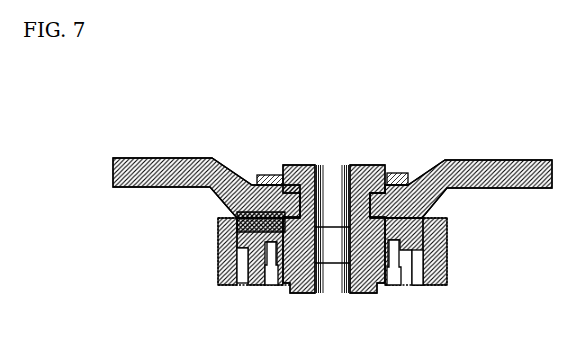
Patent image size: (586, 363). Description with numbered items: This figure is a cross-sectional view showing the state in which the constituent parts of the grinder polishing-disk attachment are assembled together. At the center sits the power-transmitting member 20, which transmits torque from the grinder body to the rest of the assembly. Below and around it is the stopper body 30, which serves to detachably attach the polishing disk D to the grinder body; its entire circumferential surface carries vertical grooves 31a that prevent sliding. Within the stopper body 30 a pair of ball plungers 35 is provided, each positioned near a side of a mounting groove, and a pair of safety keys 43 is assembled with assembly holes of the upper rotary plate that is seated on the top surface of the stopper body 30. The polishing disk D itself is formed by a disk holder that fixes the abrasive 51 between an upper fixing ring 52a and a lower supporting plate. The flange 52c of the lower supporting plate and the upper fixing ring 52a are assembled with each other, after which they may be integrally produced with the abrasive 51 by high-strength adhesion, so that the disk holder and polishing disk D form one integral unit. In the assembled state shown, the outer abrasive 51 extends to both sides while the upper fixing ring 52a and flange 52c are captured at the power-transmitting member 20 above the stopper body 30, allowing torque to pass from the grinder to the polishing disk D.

The polishing disk D is at (178, 140).
The power-transmitting member 20 is at (372, 164).
The stopper body 30 is at (327, 283).
The vertical grooves 31a is at (218, 287).
The ball plungers 35 is at (270, 287).
The safety keys 43 is at (245, 252).
The abrasive 51 is at (470, 160).
The upper fixing ring 52a is at (263, 175).
The flange 52c is at (283, 164).